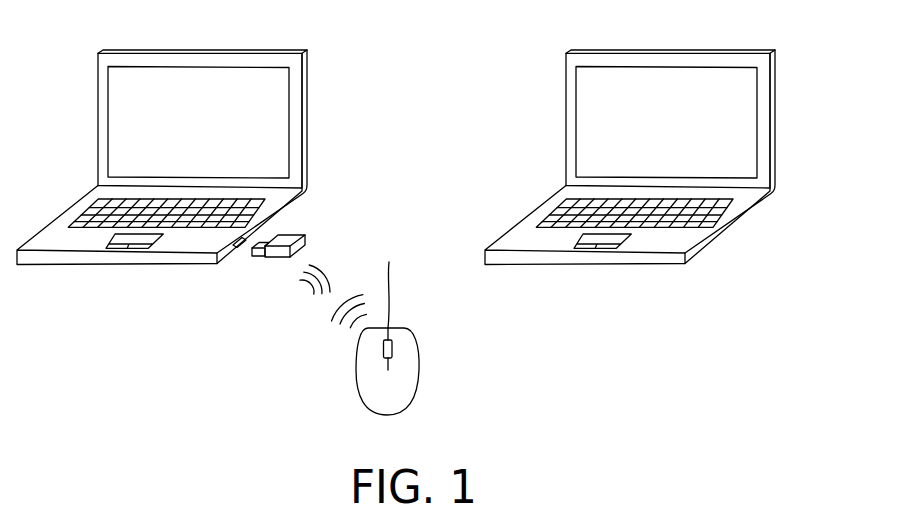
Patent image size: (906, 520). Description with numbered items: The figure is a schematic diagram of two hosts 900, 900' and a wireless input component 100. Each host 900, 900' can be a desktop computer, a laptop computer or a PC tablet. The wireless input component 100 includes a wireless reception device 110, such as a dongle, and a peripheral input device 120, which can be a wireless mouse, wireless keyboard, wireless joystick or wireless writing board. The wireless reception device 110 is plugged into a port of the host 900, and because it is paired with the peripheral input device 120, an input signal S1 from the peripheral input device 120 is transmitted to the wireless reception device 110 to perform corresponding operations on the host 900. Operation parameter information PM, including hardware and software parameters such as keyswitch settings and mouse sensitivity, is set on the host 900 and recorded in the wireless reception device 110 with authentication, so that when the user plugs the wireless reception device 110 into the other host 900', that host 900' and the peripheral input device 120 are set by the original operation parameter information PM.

The host 900 is at (172, 132).
The host 900' is at (644, 144).
The operation parameter information PM is at (301, 29).
The wireless input component 100 is at (435, 133).
The wireless reception device 110 is at (295, 233).
The peripheral input device 120 is at (389, 262).
The input signal S1 is at (312, 308).